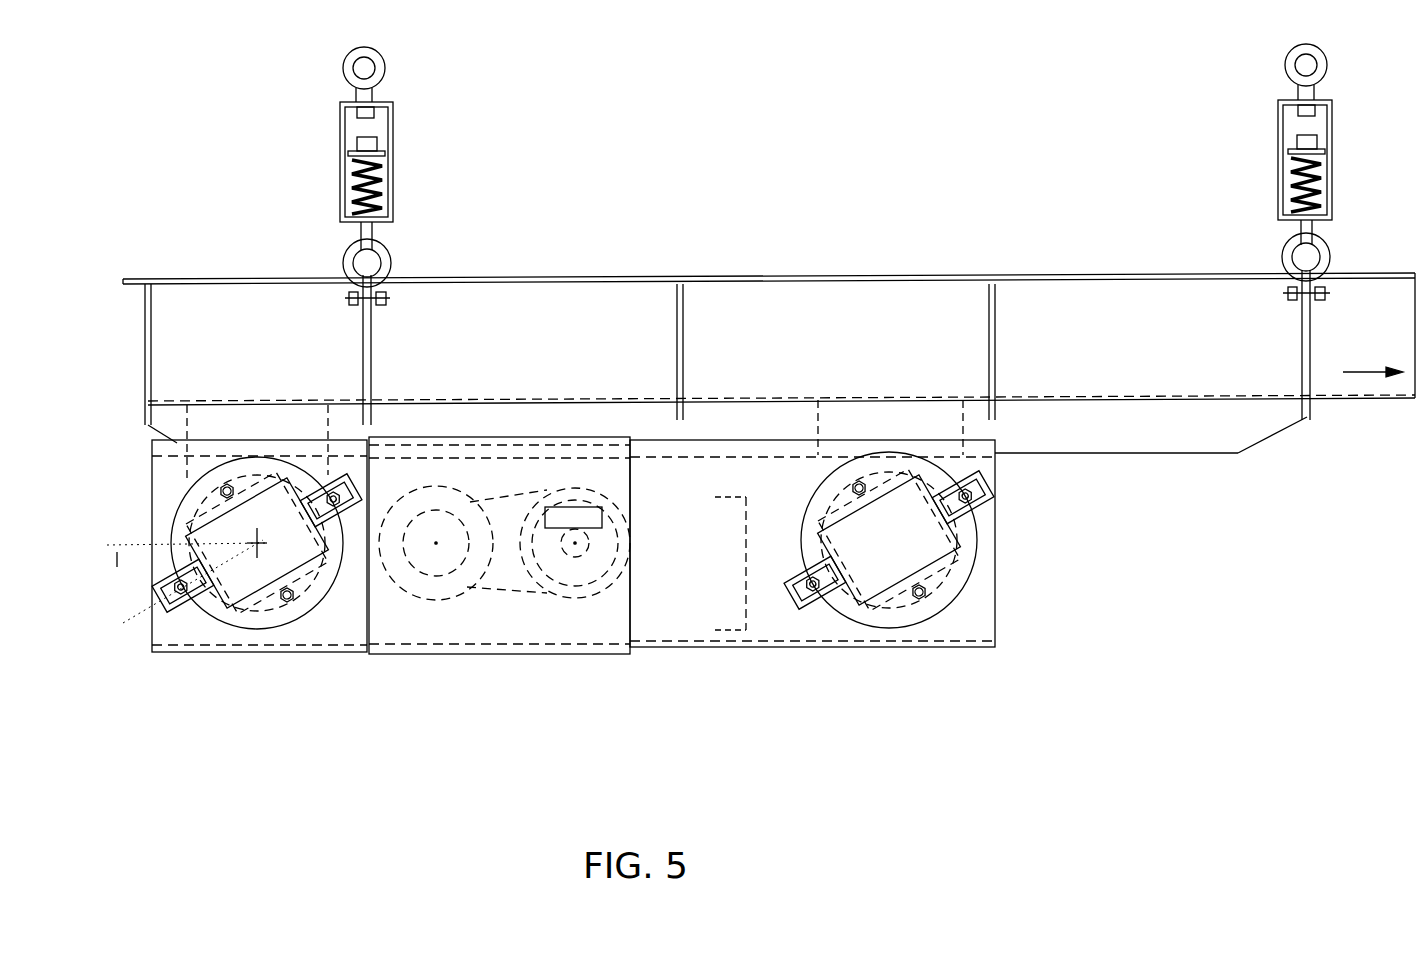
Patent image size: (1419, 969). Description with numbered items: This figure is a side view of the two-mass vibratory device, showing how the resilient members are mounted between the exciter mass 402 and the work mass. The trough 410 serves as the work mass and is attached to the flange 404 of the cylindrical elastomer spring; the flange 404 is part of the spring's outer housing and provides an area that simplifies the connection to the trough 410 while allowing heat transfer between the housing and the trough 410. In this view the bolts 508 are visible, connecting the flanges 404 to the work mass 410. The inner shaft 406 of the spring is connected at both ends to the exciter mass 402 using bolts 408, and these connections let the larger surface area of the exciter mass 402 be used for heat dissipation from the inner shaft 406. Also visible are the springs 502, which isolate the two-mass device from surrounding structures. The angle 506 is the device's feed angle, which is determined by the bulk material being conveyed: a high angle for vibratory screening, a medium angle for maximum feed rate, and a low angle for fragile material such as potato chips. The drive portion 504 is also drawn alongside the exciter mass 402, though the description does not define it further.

The exciter mass 402 is at (233, 592).
The flange 404 is at (963, 553).
The inner shaft 406 is at (832, 585).
The bolts 408 is at (988, 492).
The trough 410 is at (887, 294).
The springs 502 is at (378, 129).
The drive housing 504 is at (472, 627).
The angle 506 is at (133, 615).
The bolts 508 is at (920, 586).